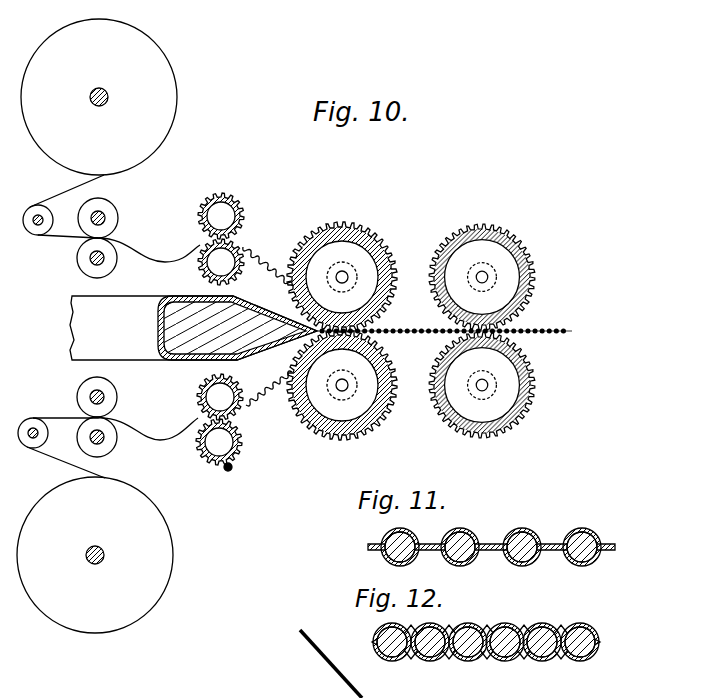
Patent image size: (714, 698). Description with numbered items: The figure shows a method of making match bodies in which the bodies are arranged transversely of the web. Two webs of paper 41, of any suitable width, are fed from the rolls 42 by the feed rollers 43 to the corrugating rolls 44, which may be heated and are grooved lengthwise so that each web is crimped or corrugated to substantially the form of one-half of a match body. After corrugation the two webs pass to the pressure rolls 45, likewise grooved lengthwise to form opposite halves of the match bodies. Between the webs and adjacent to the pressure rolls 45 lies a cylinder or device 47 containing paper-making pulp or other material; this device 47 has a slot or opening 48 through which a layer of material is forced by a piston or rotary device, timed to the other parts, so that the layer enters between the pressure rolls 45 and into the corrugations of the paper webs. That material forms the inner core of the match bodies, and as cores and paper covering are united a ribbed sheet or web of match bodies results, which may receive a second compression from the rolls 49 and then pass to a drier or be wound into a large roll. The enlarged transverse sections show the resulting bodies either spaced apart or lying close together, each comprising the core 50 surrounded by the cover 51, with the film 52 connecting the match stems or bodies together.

In FIG. 10, the paper 41 is at (56, 201).
In FIG. 10, the rolls 42 is at (173, 119).
In FIG. 10, the feed rollers 43 is at (118, 216).
In FIG. 10, the corrugating rolls 44 is at (233, 204).
In FIG. 10, the pressure rolls 45 is at (336, 223).
In FIG. 10, the cylinder or device 47 is at (72, 300).
In FIG. 10, the slot or opening 48 is at (317, 336).
In FIG. 10, the rolls 49 is at (535, 279).
In FIG. 11, the core 50 is at (528, 533).
In FIG. 12, the core 50 is at (517, 660).
In FIG. 11, the cover 51 is at (449, 533).
In FIG. 12, the cover 51 is at (480, 628).
In FIG. 11, the film 52 is at (493, 543).
In FIG. 12, the film 52 is at (411, 659).